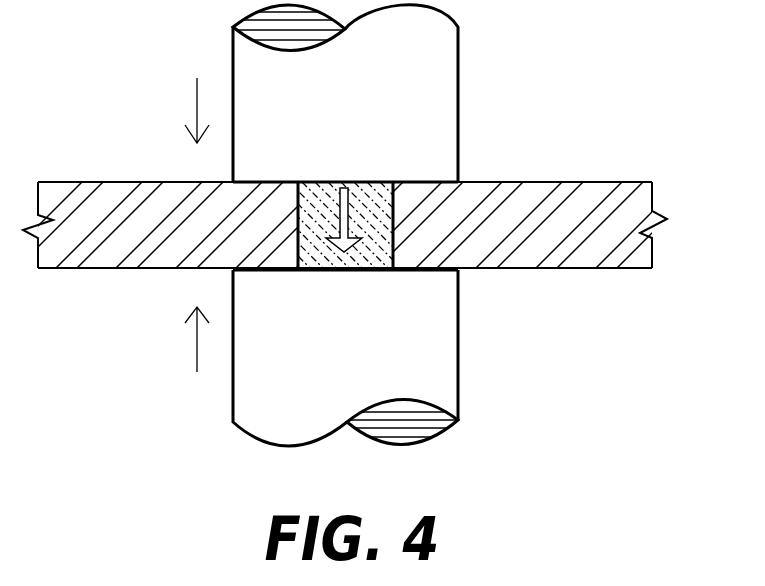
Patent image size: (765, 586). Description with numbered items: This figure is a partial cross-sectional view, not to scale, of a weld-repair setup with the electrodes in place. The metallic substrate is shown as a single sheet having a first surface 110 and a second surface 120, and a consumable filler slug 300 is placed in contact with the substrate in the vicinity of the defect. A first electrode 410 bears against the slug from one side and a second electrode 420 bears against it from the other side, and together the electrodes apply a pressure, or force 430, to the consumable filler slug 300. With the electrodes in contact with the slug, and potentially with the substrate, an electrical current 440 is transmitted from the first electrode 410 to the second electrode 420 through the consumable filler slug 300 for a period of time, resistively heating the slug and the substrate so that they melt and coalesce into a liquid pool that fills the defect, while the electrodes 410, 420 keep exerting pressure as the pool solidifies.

The first surface 110 is at (565, 182).
The second surface 120 is at (553, 268).
The consumable filler slug 300 is at (301, 249).
The first electrode 410 is at (458, 27).
The second electrode 420 is at (458, 414).
The force 430 is at (196, 80).
The electrical current 440 is at (338, 251).